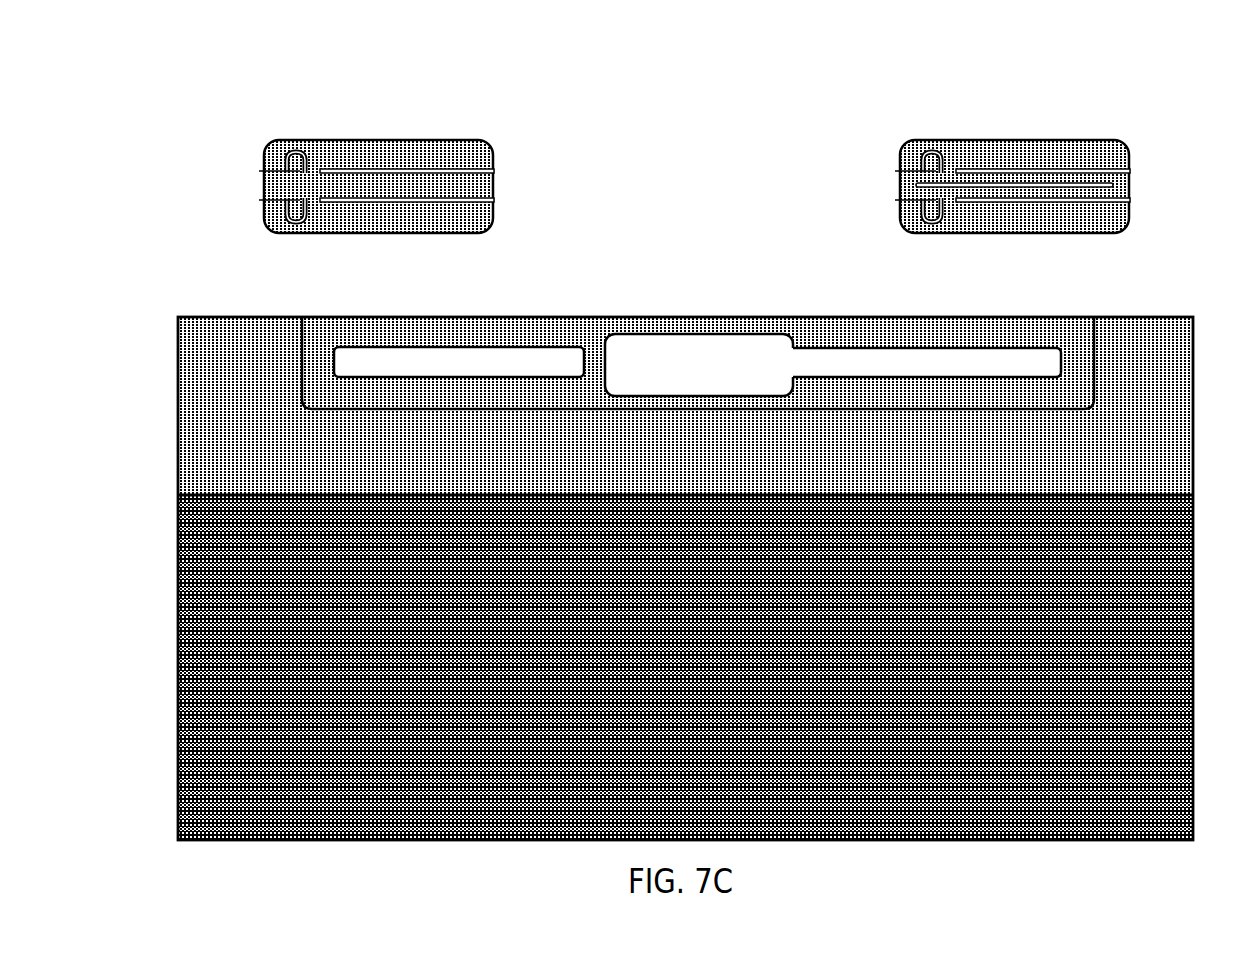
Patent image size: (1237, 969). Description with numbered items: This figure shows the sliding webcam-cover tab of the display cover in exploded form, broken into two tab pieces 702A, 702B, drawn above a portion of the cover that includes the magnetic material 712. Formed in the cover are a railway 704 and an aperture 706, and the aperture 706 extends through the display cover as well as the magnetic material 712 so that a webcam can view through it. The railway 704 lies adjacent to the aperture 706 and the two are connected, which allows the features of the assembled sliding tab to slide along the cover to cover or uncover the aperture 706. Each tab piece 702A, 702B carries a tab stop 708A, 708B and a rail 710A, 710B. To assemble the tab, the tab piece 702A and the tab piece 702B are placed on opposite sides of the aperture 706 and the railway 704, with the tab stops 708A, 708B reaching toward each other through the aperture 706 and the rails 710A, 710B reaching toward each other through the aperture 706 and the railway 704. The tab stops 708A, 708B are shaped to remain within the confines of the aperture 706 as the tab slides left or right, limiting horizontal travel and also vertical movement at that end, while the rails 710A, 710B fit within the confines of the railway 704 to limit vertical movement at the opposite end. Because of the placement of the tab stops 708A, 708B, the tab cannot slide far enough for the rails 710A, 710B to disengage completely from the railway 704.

The tab piece 702A is at (385, 142).
The tab piece 702B is at (1021, 142).
The railway 704 is at (983, 360).
The aperture 706 is at (721, 347).
The tab stop 708A is at (262, 200).
The tab stop 708B is at (898, 200).
The rail 710A is at (493, 174).
The rail 710B is at (1129, 174).
The magnetic material 712 is at (1155, 330).